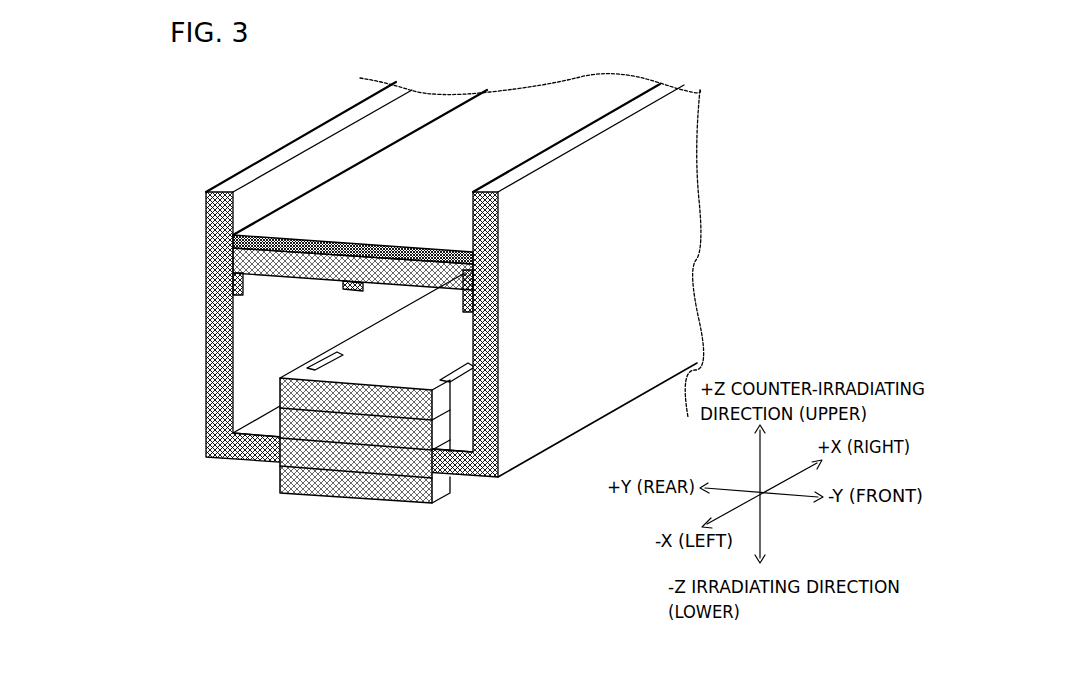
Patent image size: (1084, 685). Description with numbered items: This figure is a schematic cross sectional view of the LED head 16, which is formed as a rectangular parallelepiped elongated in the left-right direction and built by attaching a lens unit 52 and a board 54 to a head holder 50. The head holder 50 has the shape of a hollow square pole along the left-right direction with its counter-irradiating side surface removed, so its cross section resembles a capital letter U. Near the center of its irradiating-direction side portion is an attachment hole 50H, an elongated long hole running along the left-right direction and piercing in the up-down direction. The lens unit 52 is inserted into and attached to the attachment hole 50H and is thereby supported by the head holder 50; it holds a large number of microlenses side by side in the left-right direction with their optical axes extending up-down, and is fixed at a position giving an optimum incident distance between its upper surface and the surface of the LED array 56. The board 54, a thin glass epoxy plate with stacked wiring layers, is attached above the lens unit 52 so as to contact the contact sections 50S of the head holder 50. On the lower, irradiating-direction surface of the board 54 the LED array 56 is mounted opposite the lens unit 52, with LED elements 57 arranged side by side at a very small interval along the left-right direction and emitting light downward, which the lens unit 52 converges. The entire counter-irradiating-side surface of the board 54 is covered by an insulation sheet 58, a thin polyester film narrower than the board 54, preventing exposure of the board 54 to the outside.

The LED head 16 is at (123, 84).
The head holder 50 is at (580, 215).
The contact sections 50S is at (467, 268).
The attachment hole 50H is at (293, 456).
The lens unit 52 is at (460, 497).
The board 54 is at (500, 267).
The LED array 56 is at (363, 285).
The LED elements 57 is at (486, 305).
The insulation sheet 58 is at (457, 187).